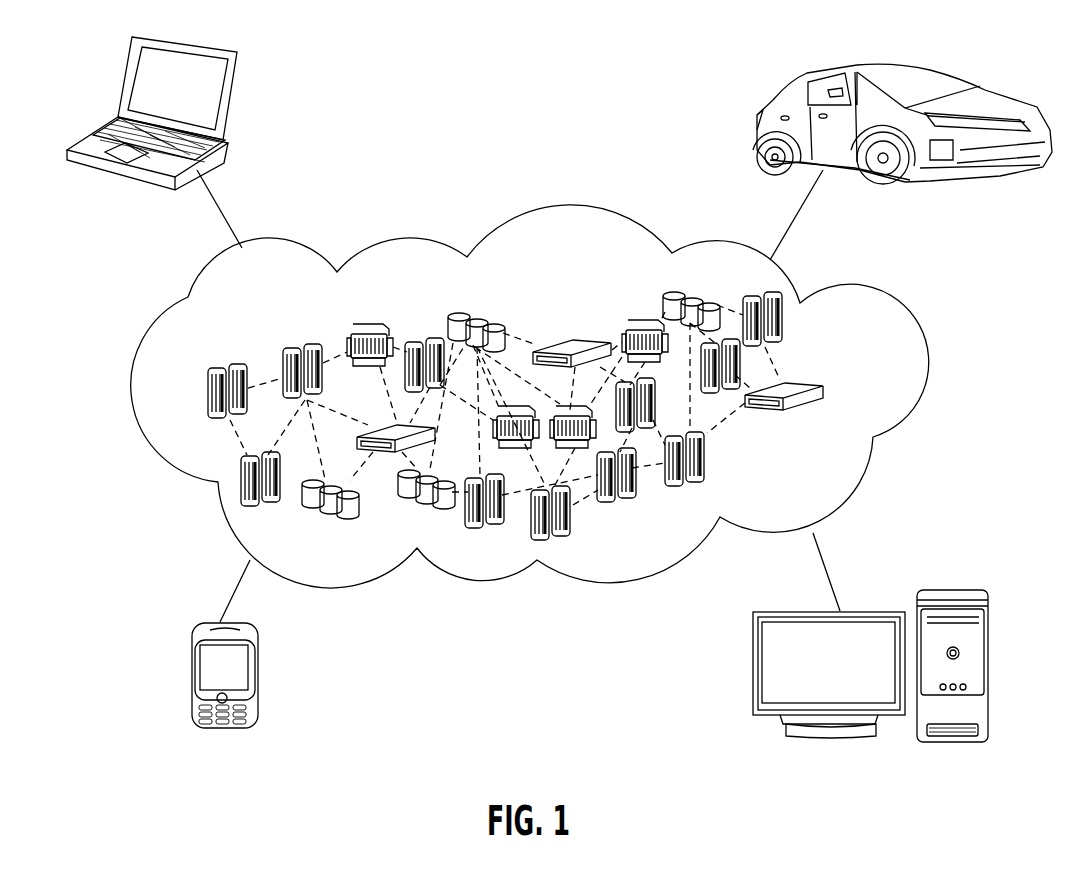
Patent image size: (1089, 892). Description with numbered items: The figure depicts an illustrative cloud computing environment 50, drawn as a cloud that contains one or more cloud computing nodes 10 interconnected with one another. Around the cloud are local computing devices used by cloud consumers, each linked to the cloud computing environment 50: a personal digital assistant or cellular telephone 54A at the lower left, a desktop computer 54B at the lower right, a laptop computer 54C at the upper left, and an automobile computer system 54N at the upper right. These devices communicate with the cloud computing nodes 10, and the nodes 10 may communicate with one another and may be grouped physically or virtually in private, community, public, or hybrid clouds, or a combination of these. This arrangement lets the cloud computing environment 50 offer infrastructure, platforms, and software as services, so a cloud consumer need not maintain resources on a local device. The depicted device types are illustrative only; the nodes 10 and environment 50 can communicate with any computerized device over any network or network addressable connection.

The cloud computing nodes 10 is at (858, 393).
The cloud computing environment 50 is at (883, 313).
The personal digital assistant (PDA) or cellular telephone 54A is at (193, 681).
The desktop computer 54B is at (954, 590).
The laptop computer 54C is at (232, 100).
The automobile computer system 54N is at (763, 110).